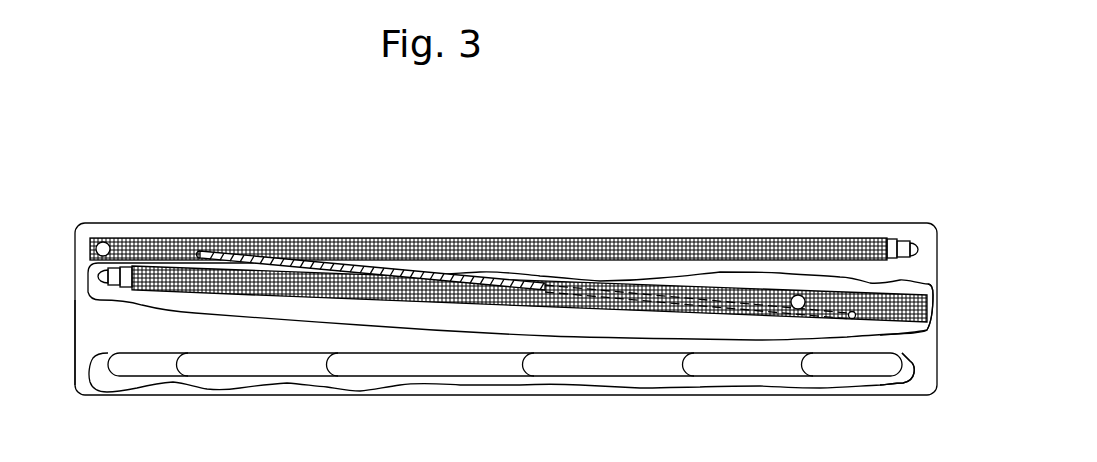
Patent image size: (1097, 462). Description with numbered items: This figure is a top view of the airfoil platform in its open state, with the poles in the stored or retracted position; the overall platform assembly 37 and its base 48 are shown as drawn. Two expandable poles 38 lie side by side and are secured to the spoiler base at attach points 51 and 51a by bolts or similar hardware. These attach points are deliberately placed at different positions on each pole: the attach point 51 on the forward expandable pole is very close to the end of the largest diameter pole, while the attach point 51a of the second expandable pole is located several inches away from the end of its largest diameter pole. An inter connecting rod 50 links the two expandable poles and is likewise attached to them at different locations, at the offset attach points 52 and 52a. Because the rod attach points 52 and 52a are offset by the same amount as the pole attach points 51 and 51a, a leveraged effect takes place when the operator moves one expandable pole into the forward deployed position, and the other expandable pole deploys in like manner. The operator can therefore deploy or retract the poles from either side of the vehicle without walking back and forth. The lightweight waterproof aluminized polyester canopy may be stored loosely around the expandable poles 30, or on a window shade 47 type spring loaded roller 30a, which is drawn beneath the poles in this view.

The tray 37 is at (430, 223).
The expandable poles 38 is at (172, 282).
The tray bottom 48 is at (92, 343).
The attach point 51 is at (101, 246).
The attach point of the inter connecting rod 52 is at (207, 253).
The inter connecting rod 50 is at (583, 285).
The attach point 51a is at (795, 298).
The attach point of the inter connecting rod 52a is at (851, 312).
The window shade 47 is at (397, 367).
The spring loaded roller 30a is at (123, 383).
The expandable poles 30 is at (847, 382).